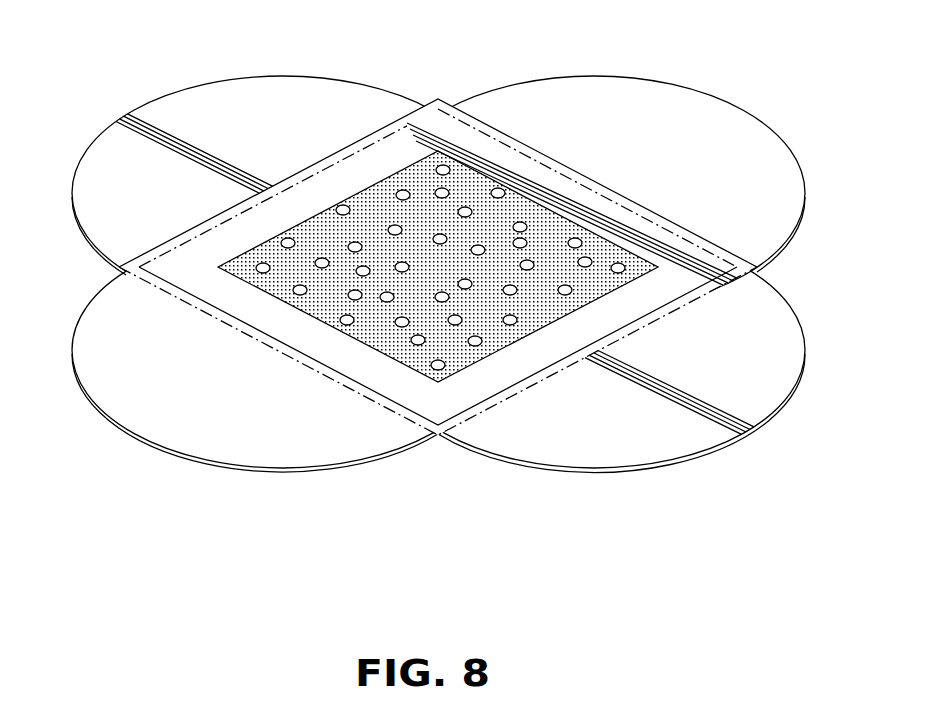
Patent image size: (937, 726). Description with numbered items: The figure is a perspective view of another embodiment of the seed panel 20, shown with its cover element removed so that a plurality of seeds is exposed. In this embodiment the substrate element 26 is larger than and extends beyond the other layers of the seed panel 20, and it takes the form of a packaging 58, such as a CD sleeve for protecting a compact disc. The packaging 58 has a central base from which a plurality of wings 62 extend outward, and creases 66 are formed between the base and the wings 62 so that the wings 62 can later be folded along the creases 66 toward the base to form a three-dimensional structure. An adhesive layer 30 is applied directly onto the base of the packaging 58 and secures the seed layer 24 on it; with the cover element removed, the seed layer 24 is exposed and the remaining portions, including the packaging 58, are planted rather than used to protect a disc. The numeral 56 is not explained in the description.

The seed panel 20 is at (443, 57).
The seed layer 24 is at (573, 243).
The substrate element 26 is at (451, 403).
The adhesive layer 30 is at (250, 266).
The cover layer 56 is at (776, 127).
The packaging 58 is at (164, 267).
The wings 62 is at (456, 276).
The creases 66 is at (540, 163).